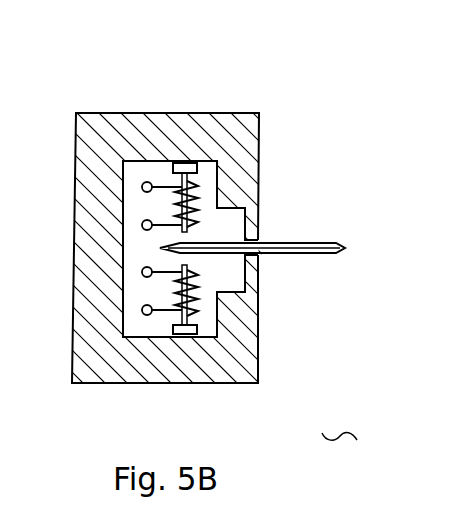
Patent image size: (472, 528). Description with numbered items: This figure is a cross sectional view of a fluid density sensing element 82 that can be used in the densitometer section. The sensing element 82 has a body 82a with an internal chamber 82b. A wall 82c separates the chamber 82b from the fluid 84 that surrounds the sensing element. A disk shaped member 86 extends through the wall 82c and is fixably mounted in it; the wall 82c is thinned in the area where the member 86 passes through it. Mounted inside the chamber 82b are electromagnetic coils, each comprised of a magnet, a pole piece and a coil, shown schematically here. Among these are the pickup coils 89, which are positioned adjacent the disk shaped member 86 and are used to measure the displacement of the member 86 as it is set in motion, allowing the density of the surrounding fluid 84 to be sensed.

The sensing element 82 is at (285, 157).
The body 82a is at (125, 112).
The internal chamber 82b is at (205, 278).
The wall 82c is at (259, 224).
The fluid 84 is at (339, 427).
The disk shaped member 86 is at (288, 255).
The pickup coils 89 is at (192, 165).